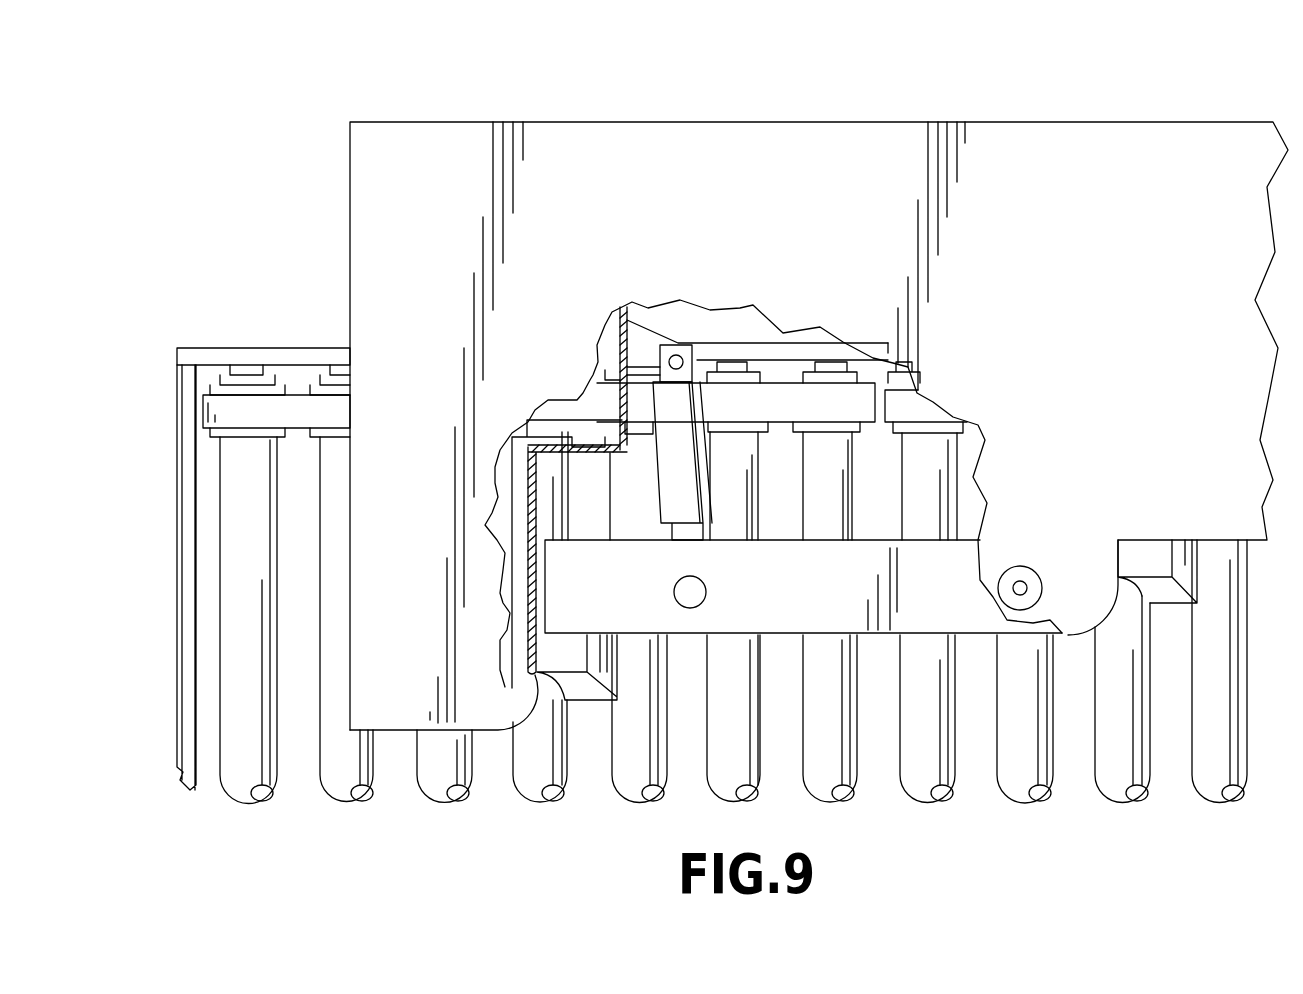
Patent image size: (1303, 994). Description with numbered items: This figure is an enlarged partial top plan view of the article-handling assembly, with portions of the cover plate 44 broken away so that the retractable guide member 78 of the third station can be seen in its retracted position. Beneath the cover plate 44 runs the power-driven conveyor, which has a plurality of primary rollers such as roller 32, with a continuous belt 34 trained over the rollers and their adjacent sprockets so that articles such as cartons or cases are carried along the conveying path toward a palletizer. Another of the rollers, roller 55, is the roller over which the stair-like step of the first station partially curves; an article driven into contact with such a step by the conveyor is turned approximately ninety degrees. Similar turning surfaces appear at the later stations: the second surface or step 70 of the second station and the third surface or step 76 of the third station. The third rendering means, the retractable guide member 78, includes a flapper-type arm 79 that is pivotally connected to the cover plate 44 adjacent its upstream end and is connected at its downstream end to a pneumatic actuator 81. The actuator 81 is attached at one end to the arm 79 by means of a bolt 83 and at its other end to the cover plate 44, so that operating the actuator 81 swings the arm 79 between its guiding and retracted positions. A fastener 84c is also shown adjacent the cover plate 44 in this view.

The cover plate 44 is at (988, 137).
The continuous belt 34 is at (295, 400).
The roller 32 is at (278, 765).
The roller 55 is at (1150, 757).
The retractable guide member 78 is at (878, 750).
The third surface or step 76 is at (580, 703).
The flapper-type arm 79 is at (842, 598).
The bolt 83 is at (672, 590).
The pneumatic actuator 81 is at (712, 493).
The washer 84c is at (1023, 567).
The second surface or step 70 is at (1203, 563).